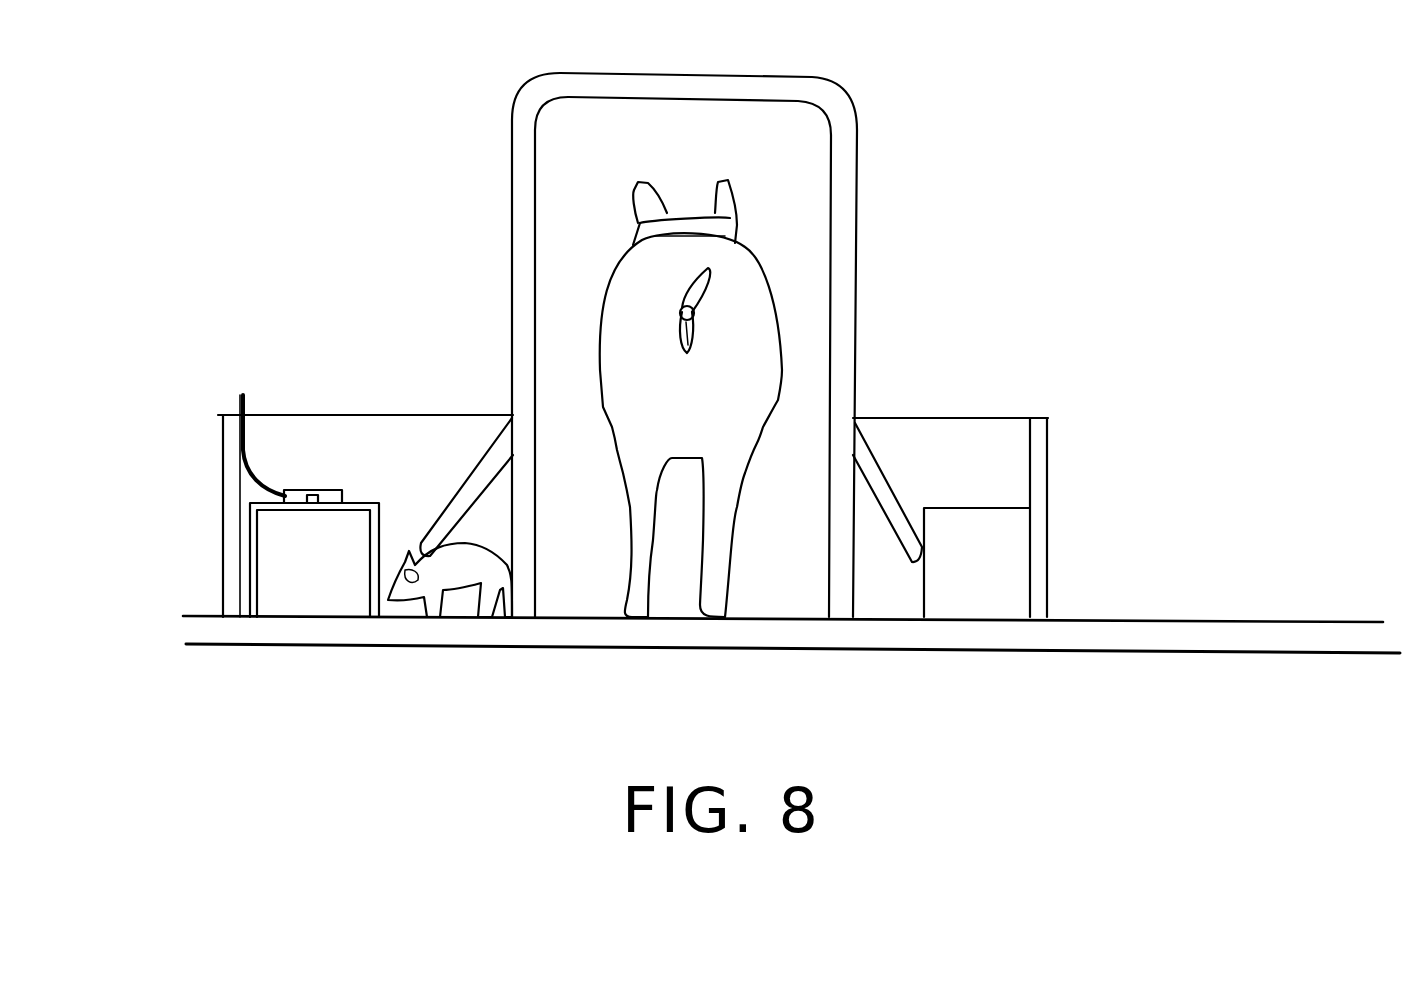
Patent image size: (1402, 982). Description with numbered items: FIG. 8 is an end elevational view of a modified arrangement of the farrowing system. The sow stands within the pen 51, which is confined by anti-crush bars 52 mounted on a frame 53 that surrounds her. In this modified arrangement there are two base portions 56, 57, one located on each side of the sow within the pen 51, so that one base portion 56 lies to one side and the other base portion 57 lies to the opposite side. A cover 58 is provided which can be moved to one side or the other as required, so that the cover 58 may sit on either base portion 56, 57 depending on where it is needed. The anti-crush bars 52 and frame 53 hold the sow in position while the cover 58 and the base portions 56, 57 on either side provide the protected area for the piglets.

The pen 51 is at (843, 353).
The anti-crush bars 52 is at (883, 477).
The frame 53 is at (843, 218).
The base portion 56 is at (1003, 550).
The base portion 57 is at (285, 570).
The cover 58 is at (313, 467).